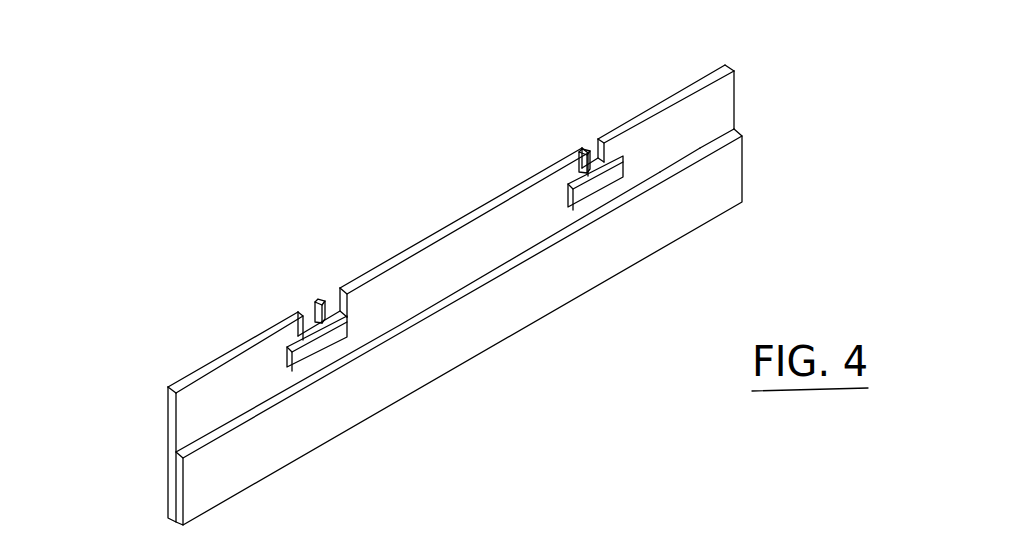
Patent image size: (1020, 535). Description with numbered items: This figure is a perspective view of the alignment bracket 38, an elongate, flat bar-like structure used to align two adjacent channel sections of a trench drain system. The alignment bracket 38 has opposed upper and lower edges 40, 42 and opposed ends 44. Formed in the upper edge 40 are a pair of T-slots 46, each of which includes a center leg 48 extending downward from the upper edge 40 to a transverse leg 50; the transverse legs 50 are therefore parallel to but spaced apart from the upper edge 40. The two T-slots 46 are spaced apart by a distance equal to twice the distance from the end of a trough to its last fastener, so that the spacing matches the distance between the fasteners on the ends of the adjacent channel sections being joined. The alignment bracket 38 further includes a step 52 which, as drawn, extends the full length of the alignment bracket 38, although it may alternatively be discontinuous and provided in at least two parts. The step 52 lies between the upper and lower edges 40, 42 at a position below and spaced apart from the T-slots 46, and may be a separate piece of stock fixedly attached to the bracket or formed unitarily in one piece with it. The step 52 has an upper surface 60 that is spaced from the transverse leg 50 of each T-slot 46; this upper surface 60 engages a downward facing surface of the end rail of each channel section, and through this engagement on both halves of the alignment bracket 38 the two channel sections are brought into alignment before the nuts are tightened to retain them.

The alignment bracket 38 is at (302, 190).
The upper edge 40 is at (684, 86).
The lower edge 42 is at (686, 236).
The opposed ends 44 is at (735, 100).
The T-slot 46 is at (303, 305).
The center leg 48 is at (322, 300).
The transverse leg 50 is at (327, 334).
The step 52 is at (679, 164).
The upper surface 60 is at (637, 185).